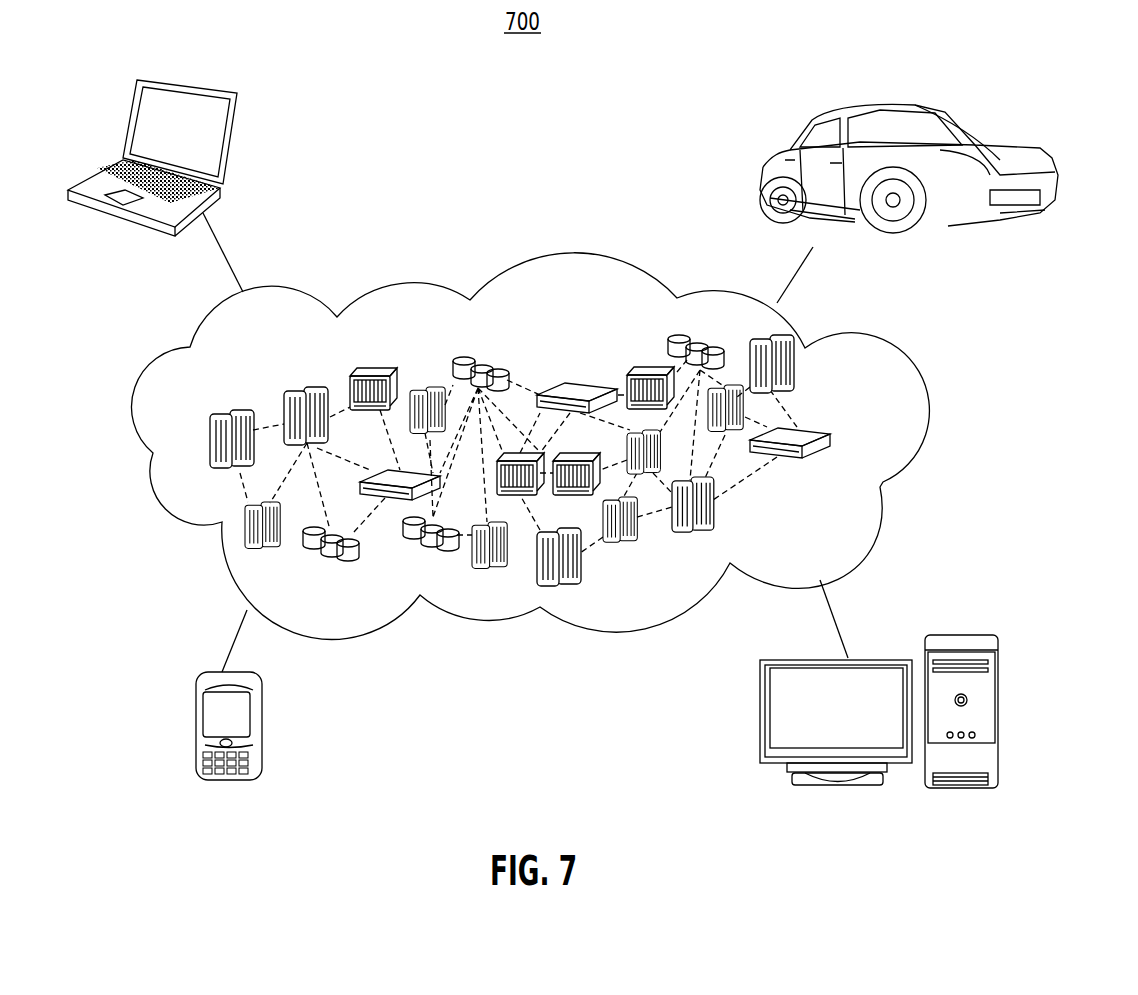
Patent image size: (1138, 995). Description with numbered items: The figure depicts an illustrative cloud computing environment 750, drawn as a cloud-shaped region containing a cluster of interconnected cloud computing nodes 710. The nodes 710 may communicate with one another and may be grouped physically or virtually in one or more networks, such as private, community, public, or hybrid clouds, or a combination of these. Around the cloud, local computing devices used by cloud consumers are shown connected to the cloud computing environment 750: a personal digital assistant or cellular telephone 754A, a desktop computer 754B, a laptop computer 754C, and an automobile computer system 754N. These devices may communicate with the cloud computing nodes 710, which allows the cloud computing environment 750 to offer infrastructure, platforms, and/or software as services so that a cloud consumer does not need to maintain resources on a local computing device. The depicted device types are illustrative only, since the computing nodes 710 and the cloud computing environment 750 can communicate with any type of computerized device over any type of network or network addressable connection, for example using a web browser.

The cloud computing environment 750 is at (885, 358).
The cloud computing nodes 710 is at (873, 443).
The personal digital assistant or cellular telephone 754A is at (193, 728).
The desktop computer 754B is at (963, 633).
The laptop computer 754C is at (232, 143).
The automobile computer system 754N is at (770, 153).